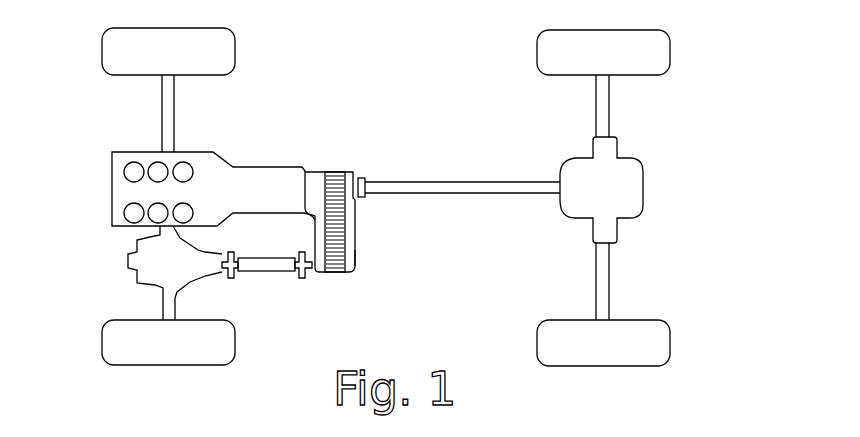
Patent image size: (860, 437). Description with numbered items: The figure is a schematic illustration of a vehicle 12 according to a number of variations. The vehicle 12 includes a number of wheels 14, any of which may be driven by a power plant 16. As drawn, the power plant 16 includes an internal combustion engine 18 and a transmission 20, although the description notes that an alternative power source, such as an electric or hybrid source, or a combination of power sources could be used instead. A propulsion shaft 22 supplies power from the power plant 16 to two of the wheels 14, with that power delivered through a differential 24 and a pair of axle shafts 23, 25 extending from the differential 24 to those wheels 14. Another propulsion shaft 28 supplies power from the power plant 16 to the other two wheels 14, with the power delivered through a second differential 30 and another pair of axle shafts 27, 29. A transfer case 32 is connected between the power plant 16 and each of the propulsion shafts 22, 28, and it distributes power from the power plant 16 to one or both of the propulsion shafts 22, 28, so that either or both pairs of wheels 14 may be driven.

The vehicle 12 is at (705, 130).
The wheels 14 is at (212, 28).
The power plant 16 is at (112, 191).
The internal combustion engine 18 is at (147, 152).
The transmission 20 is at (278, 181).
The propulsion shaft 22 is at (282, 273).
The axle shaft 23 is at (177, 310).
The differential 24 is at (148, 263).
The axle shaft 25 is at (175, 110).
The axle shaft 27 is at (609, 283).
The propulsion shaft 28 is at (468, 194).
The axle shaft 29 is at (610, 107).
The differential 30 is at (643, 188).
The transfer case 32 is at (355, 248).